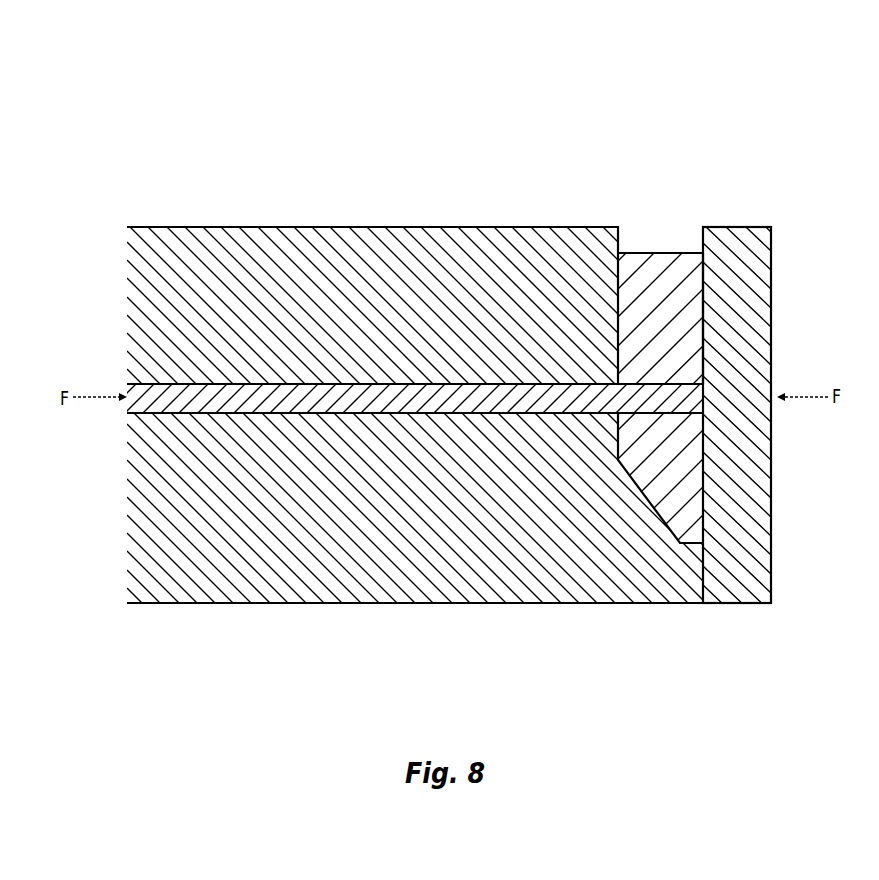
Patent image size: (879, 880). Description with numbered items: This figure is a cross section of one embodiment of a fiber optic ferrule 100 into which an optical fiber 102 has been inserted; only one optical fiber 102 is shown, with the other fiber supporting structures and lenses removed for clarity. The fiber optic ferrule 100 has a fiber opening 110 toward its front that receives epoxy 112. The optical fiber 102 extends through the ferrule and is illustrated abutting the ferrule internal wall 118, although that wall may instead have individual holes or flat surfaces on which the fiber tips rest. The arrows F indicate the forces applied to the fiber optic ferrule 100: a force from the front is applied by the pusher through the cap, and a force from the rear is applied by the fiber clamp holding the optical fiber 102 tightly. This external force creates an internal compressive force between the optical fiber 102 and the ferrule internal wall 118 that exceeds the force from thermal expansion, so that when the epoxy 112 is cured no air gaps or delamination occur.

The fiber optic ferrule 100 is at (483, 195).
The optical fiber 102 is at (172, 413).
The fiber opening 110 is at (688, 112).
The epoxy 112 is at (650, 252).
The ferrule internal wall 118 is at (702, 268).